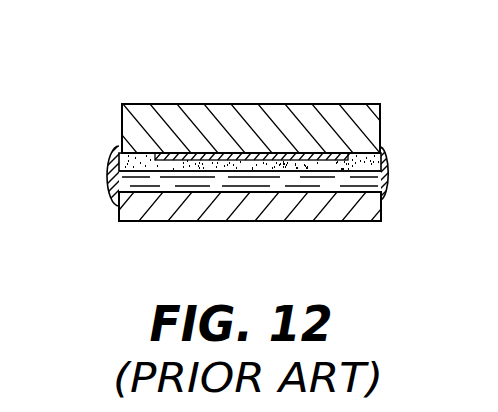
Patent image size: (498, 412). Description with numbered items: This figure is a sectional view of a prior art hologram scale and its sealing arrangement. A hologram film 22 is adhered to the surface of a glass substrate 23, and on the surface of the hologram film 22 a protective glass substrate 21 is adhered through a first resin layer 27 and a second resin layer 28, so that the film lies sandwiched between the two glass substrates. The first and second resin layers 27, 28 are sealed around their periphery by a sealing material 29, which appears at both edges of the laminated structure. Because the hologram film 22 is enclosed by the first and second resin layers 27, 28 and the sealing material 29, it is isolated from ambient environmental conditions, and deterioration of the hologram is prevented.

The protective glass substrate 21 is at (321, 213).
The hologram film 22 is at (233, 155).
The glass substrate 23 is at (330, 108).
The first resin layer 27 is at (198, 188).
The second resin layer 28 is at (136, 154).
The sealing material 29 is at (110, 158).